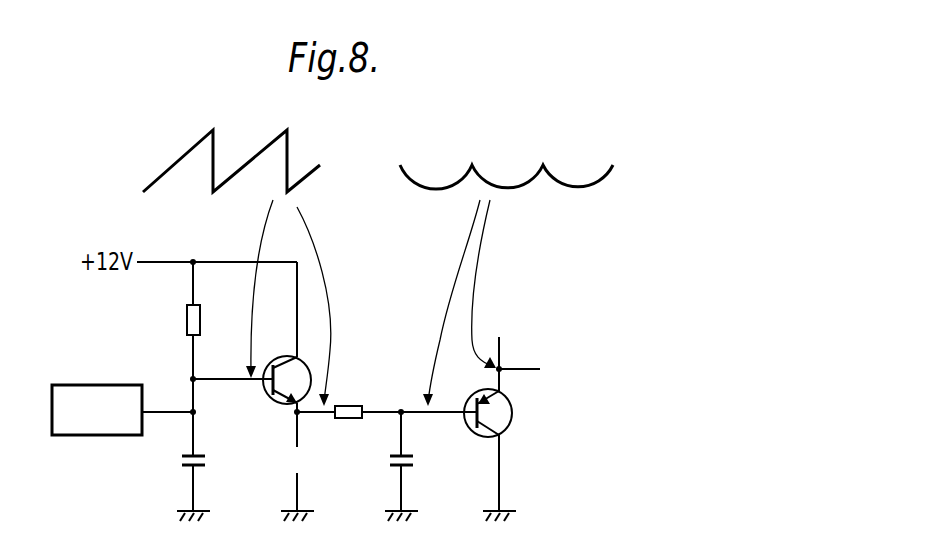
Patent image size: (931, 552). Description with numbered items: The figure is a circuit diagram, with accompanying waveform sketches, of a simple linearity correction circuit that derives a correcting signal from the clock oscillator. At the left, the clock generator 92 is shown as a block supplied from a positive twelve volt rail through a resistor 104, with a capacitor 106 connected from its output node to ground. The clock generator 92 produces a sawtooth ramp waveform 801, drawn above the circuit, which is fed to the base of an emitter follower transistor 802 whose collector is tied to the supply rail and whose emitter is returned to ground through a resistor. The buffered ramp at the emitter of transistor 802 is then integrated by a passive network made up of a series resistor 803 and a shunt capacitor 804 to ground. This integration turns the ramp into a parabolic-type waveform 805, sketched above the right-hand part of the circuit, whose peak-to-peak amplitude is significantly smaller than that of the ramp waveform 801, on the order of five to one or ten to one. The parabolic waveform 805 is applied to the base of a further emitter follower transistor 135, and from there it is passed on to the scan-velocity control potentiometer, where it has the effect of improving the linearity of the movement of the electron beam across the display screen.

The sawtooth ramp waveform 801 is at (178, 162).
The parabolic-type waveform 805 is at (414, 182).
The resistor 104 is at (187, 322).
The clock generator 92 is at (85, 392).
The capacitor 106 is at (188, 468).
The emitter follower transistor 802 is at (280, 400).
The resistor 803 is at (350, 405).
The capacitor 804 is at (389, 468).
The transistor 135 is at (505, 412).